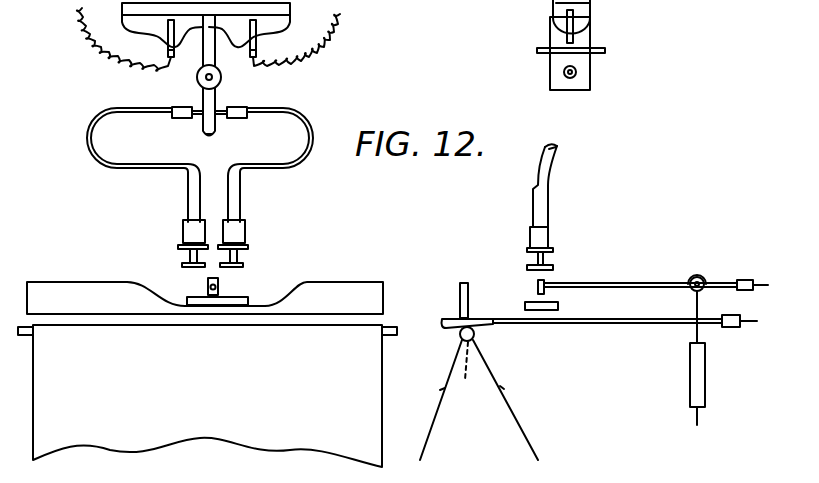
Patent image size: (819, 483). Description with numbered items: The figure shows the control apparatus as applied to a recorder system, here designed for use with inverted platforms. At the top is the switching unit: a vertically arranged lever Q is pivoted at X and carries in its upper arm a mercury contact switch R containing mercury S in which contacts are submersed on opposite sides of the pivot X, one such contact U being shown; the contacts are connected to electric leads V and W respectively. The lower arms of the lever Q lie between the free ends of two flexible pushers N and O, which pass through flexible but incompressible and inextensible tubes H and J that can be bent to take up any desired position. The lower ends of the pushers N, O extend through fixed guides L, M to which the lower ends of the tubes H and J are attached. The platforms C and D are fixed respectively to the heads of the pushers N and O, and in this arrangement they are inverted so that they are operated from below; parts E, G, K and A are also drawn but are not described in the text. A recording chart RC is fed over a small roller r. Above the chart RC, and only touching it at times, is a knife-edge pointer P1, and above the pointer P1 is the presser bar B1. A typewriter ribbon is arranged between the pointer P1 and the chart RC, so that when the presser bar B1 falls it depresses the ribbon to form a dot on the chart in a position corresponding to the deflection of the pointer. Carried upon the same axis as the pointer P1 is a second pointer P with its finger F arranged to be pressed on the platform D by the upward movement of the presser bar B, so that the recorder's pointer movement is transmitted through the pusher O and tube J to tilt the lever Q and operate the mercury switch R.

The armature lever A is at (696, 349).
The presser bar B is at (248, 297).
The presser bar B1 is at (317, 300).
The platform C is at (187, 261).
The platform D is at (242, 262).
The block E is at (183, 228).
The finger F is at (218, 280).
The block G is at (243, 231).
The flexible tube H is at (160, 168).
The flexible tube J is at (270, 167).
The tube end K is at (556, 147).
The fixed guide L is at (178, 119).
The fixed guide M is at (238, 119).
The flexible pusher N is at (197, 107).
The flexible pusher O is at (228, 106).
The second pointer P is at (208, 285).
The knife-edge pointer P1 is at (213, 316).
The lever Q is at (210, 149).
The mercury contact switch R is at (270, 19).
The mercury S is at (562, 12).
The contact U is at (568, 23).
The electric lead V is at (82, 4).
The electric lead W is at (340, 16).
The pivot X is at (213, 75).
The roller r is at (388, 336).
The recording chart RC is at (365, 397).